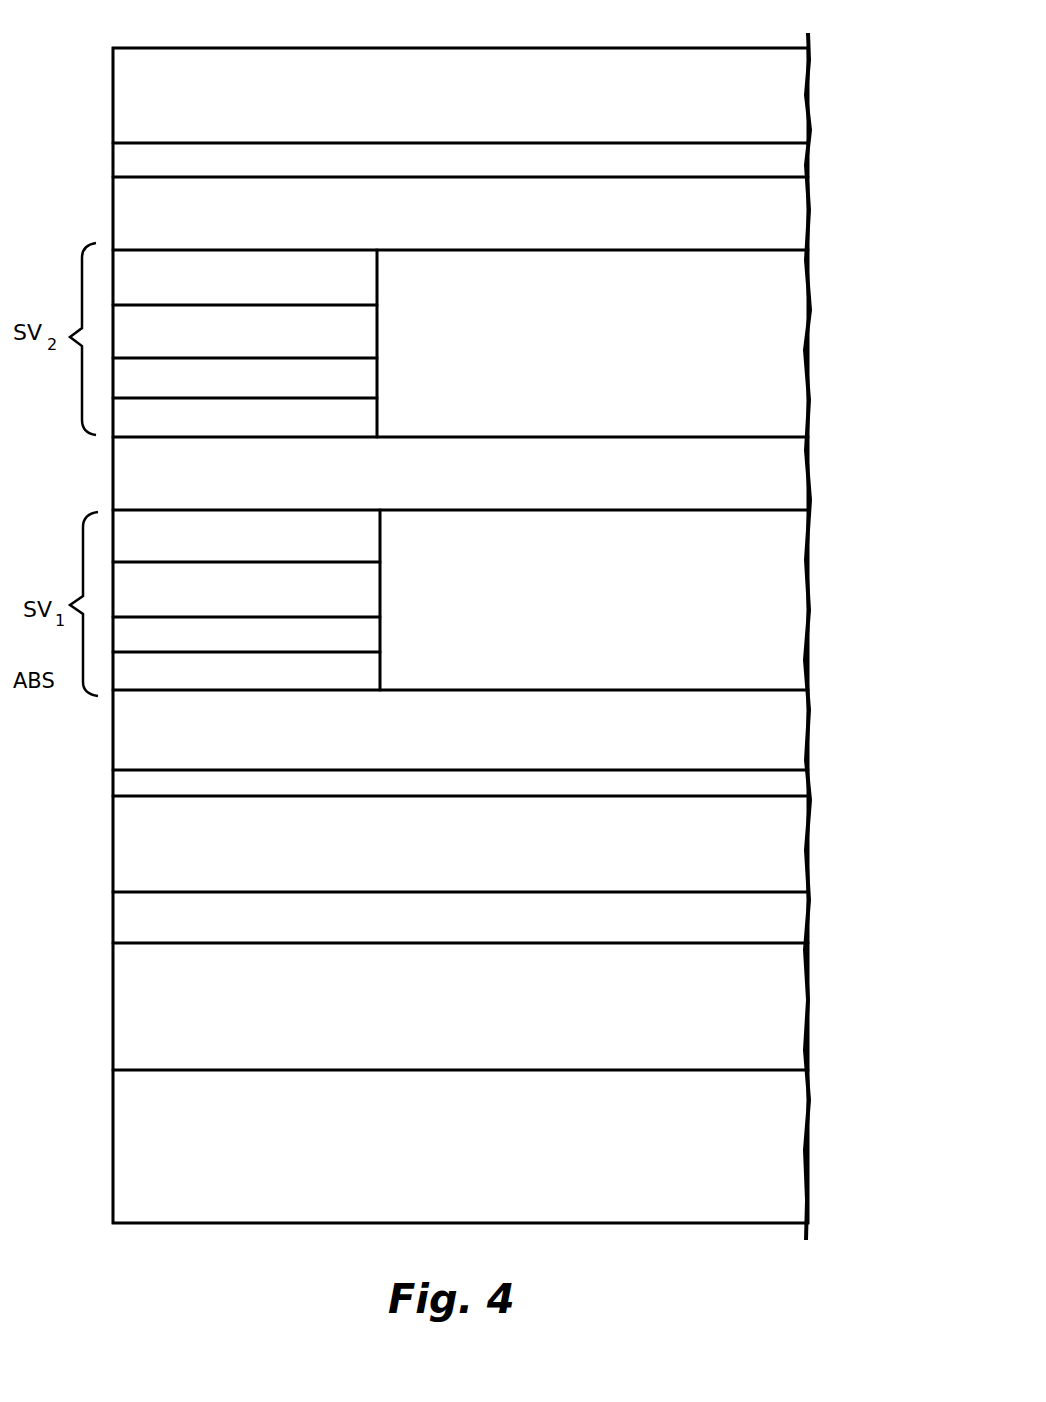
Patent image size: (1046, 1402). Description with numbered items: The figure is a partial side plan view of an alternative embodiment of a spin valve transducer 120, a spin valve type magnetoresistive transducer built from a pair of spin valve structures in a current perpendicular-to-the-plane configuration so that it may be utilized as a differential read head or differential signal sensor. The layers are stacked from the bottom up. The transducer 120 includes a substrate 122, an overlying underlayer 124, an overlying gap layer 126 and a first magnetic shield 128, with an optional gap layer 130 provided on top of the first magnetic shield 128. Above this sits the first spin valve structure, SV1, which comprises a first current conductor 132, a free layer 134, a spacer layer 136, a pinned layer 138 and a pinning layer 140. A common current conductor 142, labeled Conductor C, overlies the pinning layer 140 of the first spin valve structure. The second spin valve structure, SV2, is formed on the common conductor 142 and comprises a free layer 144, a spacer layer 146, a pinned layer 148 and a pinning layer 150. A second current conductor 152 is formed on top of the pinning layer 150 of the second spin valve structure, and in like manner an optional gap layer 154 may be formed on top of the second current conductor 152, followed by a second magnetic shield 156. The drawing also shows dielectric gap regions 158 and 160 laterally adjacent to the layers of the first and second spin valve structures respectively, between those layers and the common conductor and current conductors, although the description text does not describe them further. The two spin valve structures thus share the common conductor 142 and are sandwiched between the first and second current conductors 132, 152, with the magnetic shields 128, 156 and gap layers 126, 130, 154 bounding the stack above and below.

The spin valve transducer 120 is at (287, 1268).
The substrate 122 is at (782, 1138).
The underlayer 124 is at (786, 989).
The gap layer 126 is at (787, 915).
The first magnetic shield 128 is at (784, 840).
The gap layer 130 is at (797, 780).
The first current conductor 132 is at (797, 707).
The free layer 134 is at (372, 667).
The spacer layer 136 is at (372, 628).
The pinned layer 138 is at (373, 588).
The pinning layer 140 is at (375, 525).
The common current conductor 142 is at (793, 467).
The free layer 144 is at (370, 410).
The spacer layer 146 is at (372, 370).
The pinned layer 148 is at (372, 320).
The pinning layer 150 is at (375, 283).
The second current conductor 152 is at (795, 210).
The gap layer 154 is at (797, 160).
The second magnetic shield 156 is at (795, 80).
The dielectric gap of SV1 158 is at (702, 598).
The dielectric gap of SV2 160 is at (703, 333).